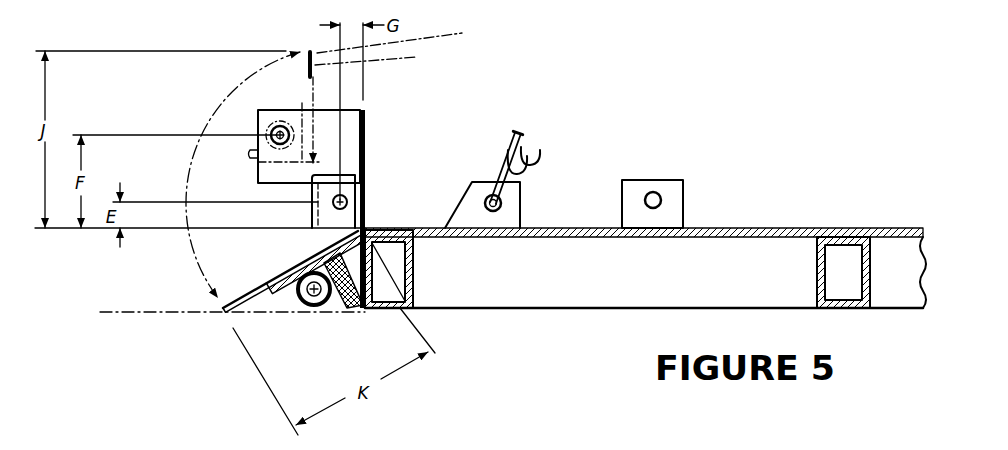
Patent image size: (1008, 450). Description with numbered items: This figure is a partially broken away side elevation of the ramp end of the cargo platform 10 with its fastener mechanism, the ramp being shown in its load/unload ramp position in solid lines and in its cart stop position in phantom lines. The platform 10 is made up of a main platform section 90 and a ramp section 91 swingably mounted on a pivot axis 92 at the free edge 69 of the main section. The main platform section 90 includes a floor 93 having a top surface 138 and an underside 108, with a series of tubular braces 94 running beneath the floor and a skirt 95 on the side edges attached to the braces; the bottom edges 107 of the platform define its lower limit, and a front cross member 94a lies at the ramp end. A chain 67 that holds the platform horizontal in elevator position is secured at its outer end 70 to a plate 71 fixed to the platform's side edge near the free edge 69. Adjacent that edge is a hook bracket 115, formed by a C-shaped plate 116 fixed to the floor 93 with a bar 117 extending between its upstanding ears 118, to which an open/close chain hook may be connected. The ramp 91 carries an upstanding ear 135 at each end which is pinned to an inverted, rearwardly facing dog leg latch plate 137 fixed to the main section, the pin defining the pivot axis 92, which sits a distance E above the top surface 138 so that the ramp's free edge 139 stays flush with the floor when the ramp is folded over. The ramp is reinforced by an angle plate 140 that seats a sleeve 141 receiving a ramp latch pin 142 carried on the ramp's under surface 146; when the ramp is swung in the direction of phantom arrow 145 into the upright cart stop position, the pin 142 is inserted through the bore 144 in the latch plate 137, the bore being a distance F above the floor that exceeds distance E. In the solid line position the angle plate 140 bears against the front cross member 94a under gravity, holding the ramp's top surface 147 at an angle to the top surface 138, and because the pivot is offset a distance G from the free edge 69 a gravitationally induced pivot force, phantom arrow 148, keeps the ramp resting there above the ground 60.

The cargo platform 10 is at (781, 157).
The truck bed 60 is at (910, 281).
The chain 67 is at (538, 148).
The free edge 69 is at (420, 279).
The outer end 70 is at (507, 203).
The plate 71 is at (485, 179).
The main platform section 90 is at (771, 226).
The ramp section 91 is at (270, 278).
The pivot axis 92 is at (347, 200).
The floor 93 is at (573, 238).
The tubular brace 94 is at (817, 282).
The front cross member 94a is at (428, 300).
The skirt 95 is at (669, 292).
The bottom edge 107 is at (598, 311).
The underside 108 is at (663, 238).
The hook bracket 115 is at (671, 177).
The C-shaped plate 116 is at (688, 182).
The bar 117 is at (650, 191).
The upstanding ear 118 is at (685, 208).
The upstanding ear 135 is at (362, 172).
The dog leg latch plate 137 is at (363, 110).
The top surface 138 is at (445, 226).
The free edge 139 is at (222, 313).
The angle plate 140 is at (328, 310).
The sleeve 141 is at (303, 300).
The ramp latch pin 142 is at (270, 293).
The bore 144 is at (283, 125).
The phantom arrow 145 is at (271, 62).
The under surface 146 is at (262, 295).
The top surface 147 is at (192, 288).
The phantom arrow 148 is at (213, 293).